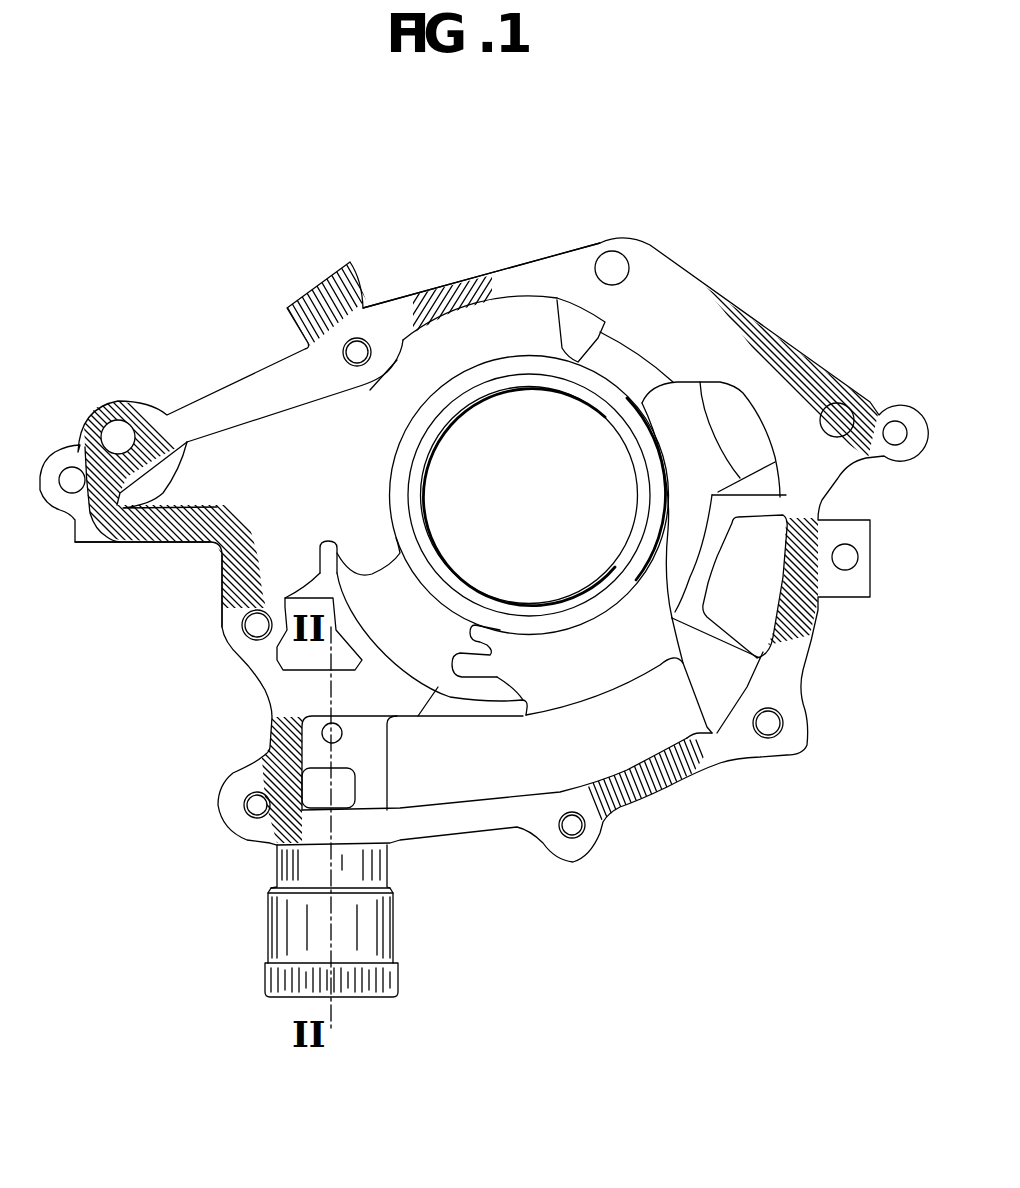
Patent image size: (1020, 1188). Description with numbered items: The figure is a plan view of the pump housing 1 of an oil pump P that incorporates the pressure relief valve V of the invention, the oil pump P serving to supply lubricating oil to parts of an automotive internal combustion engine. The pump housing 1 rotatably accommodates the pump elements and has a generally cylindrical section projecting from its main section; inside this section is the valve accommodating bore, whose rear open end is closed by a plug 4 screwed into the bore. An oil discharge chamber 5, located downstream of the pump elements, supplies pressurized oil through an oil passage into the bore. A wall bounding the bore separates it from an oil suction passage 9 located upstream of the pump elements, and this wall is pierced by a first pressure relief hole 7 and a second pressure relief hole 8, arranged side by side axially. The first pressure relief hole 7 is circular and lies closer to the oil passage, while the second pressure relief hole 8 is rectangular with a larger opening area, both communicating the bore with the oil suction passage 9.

The oil pump P is at (736, 292).
The pump housing 1 is at (456, 292).
The plug 4 is at (398, 977).
The oil discharge chamber 5 is at (263, 558).
The first pressure relief hole 7 is at (338, 727).
The second pressure relief hole 8 is at (350, 791).
The oil suction passage 9 is at (507, 788).
The pressure relief valve V is at (305, 924).